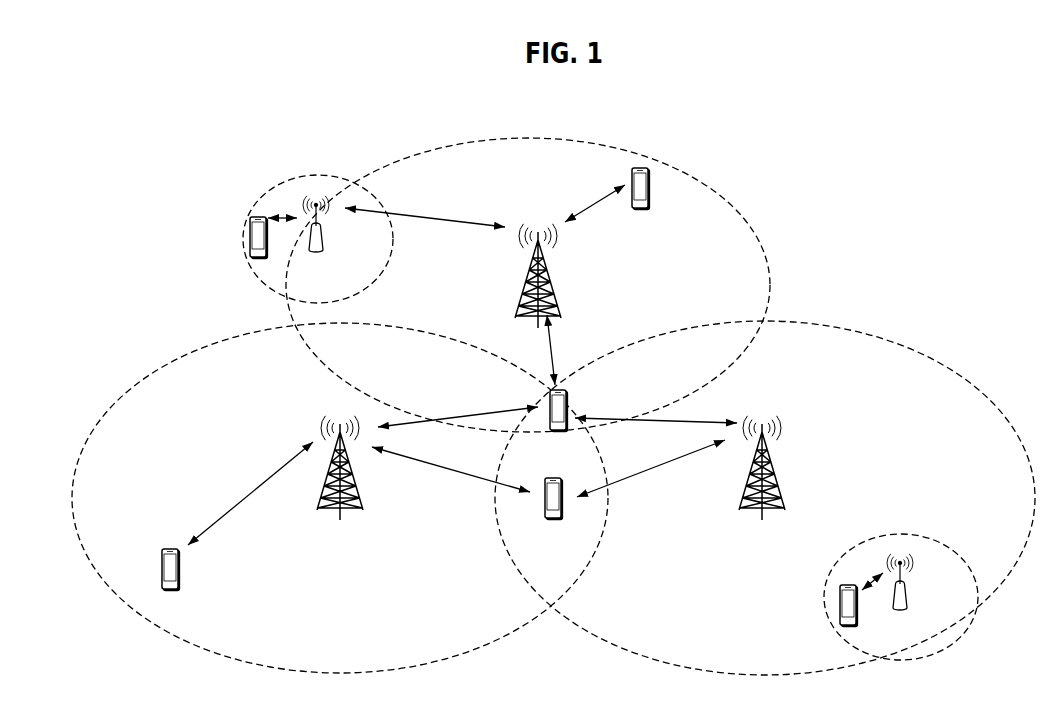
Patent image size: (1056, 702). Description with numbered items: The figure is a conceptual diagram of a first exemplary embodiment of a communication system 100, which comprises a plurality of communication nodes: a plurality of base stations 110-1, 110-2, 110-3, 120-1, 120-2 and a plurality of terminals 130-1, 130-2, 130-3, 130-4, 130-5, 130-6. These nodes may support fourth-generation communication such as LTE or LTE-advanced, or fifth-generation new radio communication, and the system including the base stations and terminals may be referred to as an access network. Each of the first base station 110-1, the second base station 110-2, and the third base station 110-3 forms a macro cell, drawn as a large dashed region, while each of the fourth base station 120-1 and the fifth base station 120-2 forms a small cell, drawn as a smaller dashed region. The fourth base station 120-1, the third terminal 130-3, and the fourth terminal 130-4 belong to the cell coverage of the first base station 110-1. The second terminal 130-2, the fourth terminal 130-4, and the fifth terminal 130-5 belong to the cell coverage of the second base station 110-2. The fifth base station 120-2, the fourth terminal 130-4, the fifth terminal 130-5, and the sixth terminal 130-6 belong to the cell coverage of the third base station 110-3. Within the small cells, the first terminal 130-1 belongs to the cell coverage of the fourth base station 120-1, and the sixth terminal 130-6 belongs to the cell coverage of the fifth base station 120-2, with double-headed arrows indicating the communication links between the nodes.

The communication system 100 is at (545, 113).
The first base station 110-1 is at (547, 273).
The second base station 110-2 is at (340, 518).
The third base station 110-3 is at (768, 472).
The fourth base station 120-1 is at (323, 240).
The fifth base station 120-2 is at (907, 590).
The first terminal 130-1 is at (250, 230).
The second terminal 130-2 is at (178, 570).
The third terminal 130-3 is at (648, 190).
The fourth terminal 130-4 is at (568, 395).
The fifth terminal 130-5 is at (553, 478).
The sixth terminal 130-6 is at (839, 602).